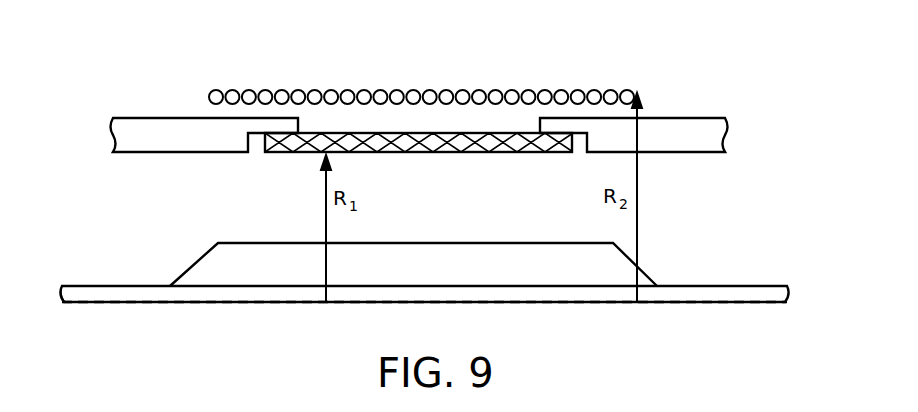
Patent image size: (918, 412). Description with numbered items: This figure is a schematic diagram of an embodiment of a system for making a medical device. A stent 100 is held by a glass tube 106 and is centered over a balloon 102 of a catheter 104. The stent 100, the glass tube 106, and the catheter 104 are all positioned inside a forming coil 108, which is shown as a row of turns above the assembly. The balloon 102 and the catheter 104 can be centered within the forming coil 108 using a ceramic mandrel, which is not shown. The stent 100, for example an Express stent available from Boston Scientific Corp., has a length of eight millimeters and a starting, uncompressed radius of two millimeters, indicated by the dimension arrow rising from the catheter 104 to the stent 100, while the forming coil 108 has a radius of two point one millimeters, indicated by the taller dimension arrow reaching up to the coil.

The stent 100 is at (277, 152).
The balloon 102 is at (643, 265).
The catheter 104 is at (760, 286).
The glass tube 106 is at (702, 150).
The forming coil 108 is at (528, 88).